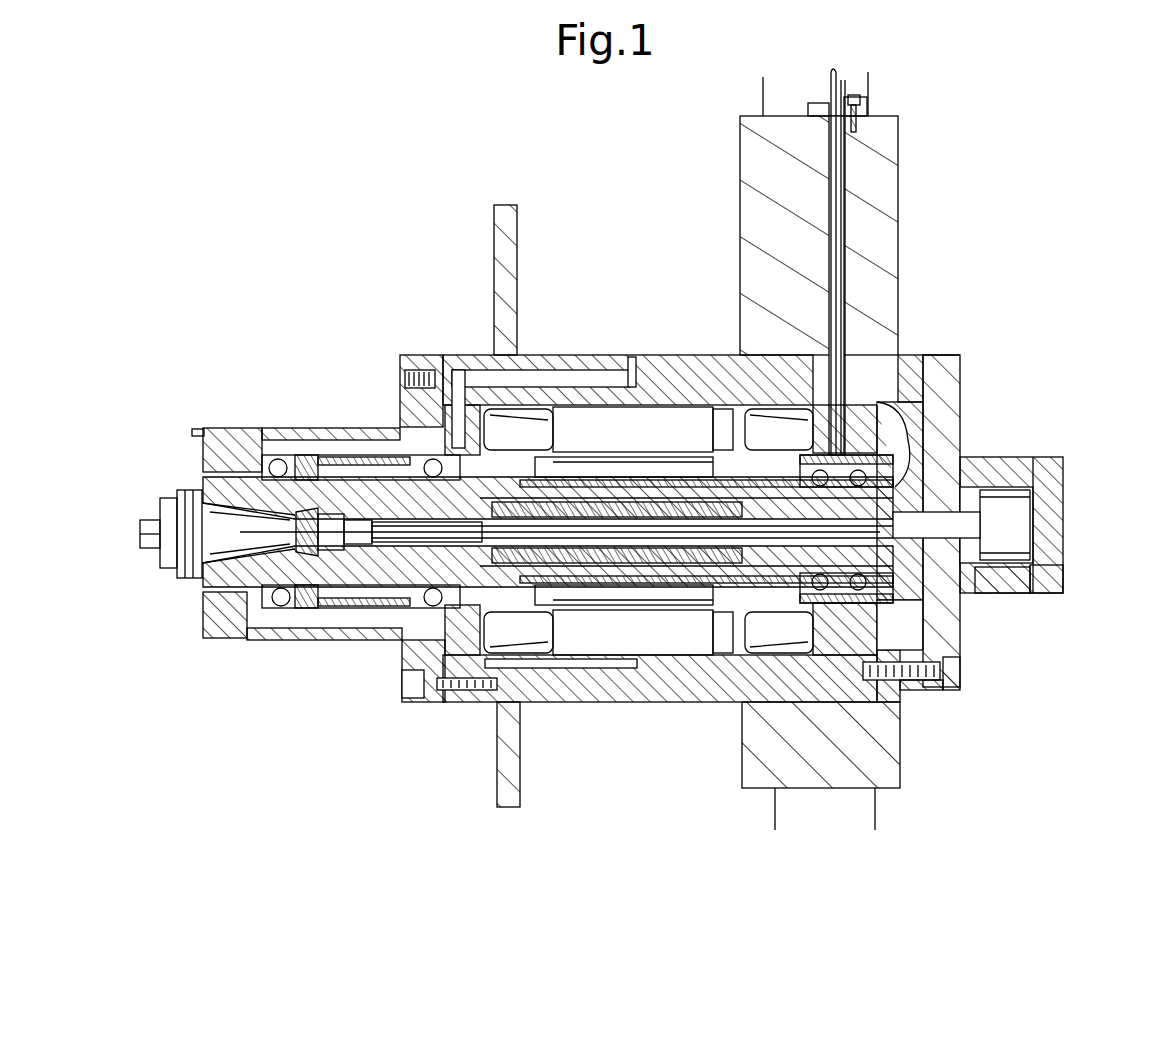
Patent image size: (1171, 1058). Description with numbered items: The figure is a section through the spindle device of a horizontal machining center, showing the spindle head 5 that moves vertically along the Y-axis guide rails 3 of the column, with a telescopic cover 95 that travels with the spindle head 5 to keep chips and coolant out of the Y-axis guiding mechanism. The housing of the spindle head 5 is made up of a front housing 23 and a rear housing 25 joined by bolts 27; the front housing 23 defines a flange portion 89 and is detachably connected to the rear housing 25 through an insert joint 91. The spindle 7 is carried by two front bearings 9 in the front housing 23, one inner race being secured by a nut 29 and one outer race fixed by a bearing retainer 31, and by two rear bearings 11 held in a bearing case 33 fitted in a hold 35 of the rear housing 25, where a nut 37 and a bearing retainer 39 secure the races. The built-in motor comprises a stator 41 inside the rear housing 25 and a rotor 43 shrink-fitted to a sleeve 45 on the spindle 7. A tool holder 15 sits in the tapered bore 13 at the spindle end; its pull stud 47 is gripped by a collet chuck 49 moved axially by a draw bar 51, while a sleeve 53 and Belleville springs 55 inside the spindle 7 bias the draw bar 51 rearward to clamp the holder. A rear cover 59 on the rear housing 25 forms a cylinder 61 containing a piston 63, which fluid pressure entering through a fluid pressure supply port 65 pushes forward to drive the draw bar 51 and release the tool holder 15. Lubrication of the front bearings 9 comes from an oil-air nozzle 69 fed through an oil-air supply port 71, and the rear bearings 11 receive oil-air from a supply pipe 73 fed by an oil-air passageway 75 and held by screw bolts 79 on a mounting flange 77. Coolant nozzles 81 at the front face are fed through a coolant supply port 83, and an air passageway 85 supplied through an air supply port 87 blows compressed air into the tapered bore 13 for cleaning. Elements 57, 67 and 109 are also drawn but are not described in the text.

The Y-axis guide rails 3 is at (760, 95).
The spindle head 5 is at (625, 275).
The spindle 7 is at (212, 490).
The front bearings 9 is at (275, 458).
The rear bearings 11 is at (906, 690).
The tapered bore 13 is at (182, 566).
The tool holder 15 is at (172, 503).
The front housing 23 is at (382, 645).
The rear housing 25 is at (695, 355).
The bolts 27 is at (410, 700).
The nut 29 is at (463, 690).
The bearing retainer 31 is at (232, 428).
The bearing case 33 is at (905, 352).
The hold 35 is at (900, 625).
The nut 37 is at (930, 395).
The bearing retainer 39 is at (946, 360).
The stator 41 is at (590, 640).
The rotor 43 is at (676, 605).
The sleeve 45 is at (748, 625).
The pull stud 47 is at (304, 556).
The collet chuck 49 is at (330, 552).
The draw bar 51 is at (378, 548).
The sleeve 53 is at (352, 548).
The Belleville springs 55 is at (556, 648).
The fastening bolt 57 is at (925, 600).
The rear cover 59 is at (948, 437).
The cylinder 61 is at (1048, 525).
The piston 63 is at (1012, 492).
The fluid pressure supply port 65 is at (1032, 593).
The rear seal 67 is at (978, 593).
The oil-air nozzle 69 is at (304, 455).
The oil-air supply port 71 is at (633, 362).
The supply pipe 73 is at (846, 195).
The oil-air passageway 75 is at (845, 72).
The mounting flange 77 is at (869, 122).
The screw bolts 79 is at (860, 100).
The coolant nozzles 81 is at (192, 432).
The coolant supply port 83 is at (602, 372).
The air passageway 85 is at (215, 602).
The air supply port 87 is at (630, 670).
The flange portion 89 is at (420, 372).
The insert joint 91 is at (456, 440).
The telescopic cover 95 is at (494, 246).
The upper block 109 is at (403, 362).